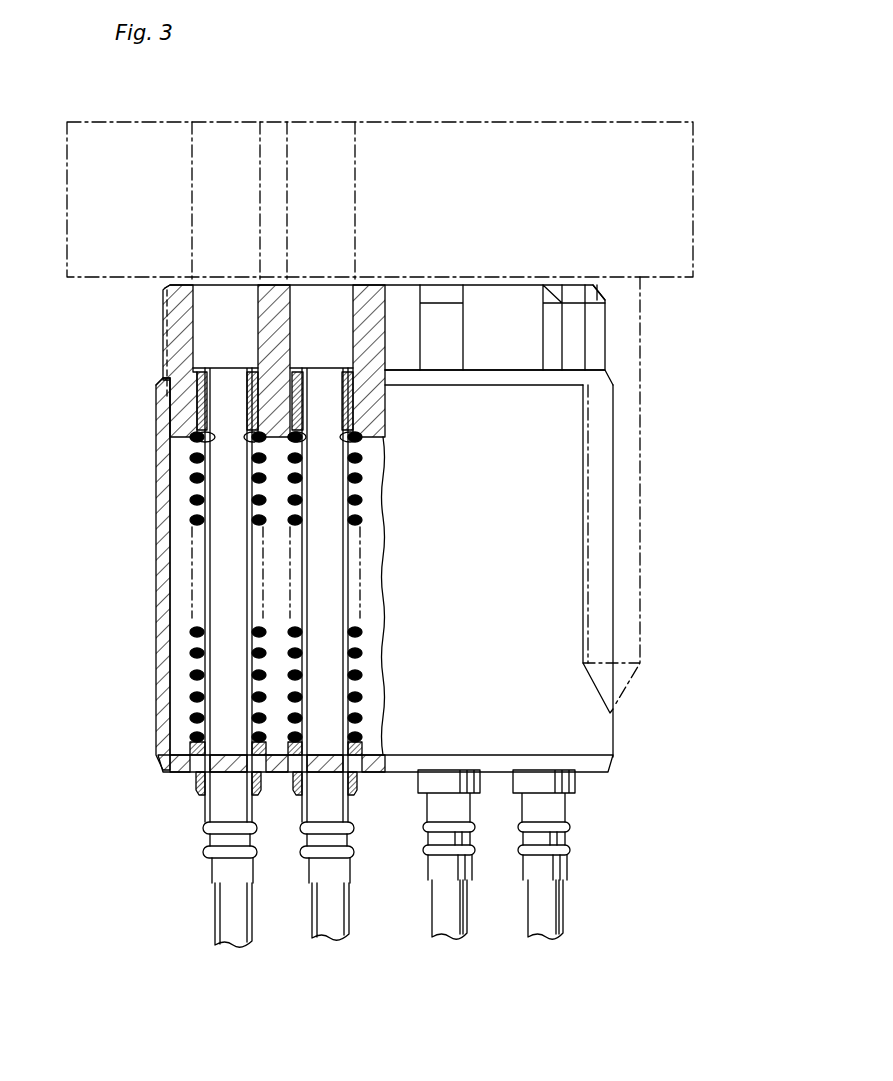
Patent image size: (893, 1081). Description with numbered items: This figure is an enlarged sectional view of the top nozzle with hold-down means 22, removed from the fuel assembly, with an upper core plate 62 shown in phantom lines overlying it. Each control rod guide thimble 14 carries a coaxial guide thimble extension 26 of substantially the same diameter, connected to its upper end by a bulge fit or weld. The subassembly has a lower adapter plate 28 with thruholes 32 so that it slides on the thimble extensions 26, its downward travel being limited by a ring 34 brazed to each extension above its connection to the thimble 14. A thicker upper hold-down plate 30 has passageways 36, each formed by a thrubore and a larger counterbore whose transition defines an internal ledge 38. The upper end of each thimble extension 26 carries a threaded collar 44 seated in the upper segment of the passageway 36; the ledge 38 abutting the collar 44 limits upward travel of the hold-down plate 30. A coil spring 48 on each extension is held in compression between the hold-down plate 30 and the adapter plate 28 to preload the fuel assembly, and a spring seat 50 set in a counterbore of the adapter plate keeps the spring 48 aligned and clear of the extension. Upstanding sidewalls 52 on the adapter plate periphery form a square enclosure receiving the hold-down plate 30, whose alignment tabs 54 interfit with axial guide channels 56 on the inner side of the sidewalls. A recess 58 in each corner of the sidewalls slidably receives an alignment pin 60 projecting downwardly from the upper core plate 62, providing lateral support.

The control rod guide thimble 14 is at (212, 920).
The top nozzle with hold-down means 22 is at (118, 547).
The guide thimble extension 26 is at (302, 805).
The lower adapter plate 28 is at (180, 776).
The upper hold-down plate 30 is at (178, 318).
The thruhole 32 is at (192, 777).
The ring 34 is at (357, 795).
The passageway 36 is at (262, 305).
The internal ledge 38 is at (205, 436).
The collar 44 is at (202, 378).
The coil spring 48 is at (197, 630).
The spring seat 50 is at (193, 745).
The upstanding sidewalls 52 is at (157, 570).
The alignment tab 54 is at (163, 350).
The guide channel 56 is at (160, 487).
The recess 58 is at (583, 530).
The alignment pin 60 is at (643, 473).
The upper core plate 62 is at (610, 193).